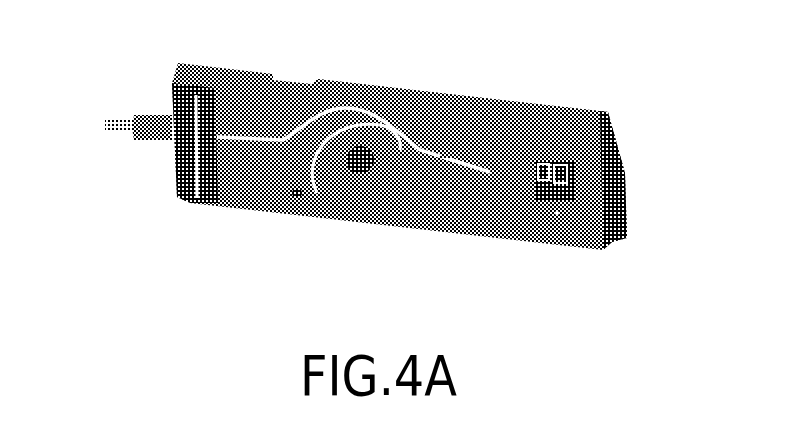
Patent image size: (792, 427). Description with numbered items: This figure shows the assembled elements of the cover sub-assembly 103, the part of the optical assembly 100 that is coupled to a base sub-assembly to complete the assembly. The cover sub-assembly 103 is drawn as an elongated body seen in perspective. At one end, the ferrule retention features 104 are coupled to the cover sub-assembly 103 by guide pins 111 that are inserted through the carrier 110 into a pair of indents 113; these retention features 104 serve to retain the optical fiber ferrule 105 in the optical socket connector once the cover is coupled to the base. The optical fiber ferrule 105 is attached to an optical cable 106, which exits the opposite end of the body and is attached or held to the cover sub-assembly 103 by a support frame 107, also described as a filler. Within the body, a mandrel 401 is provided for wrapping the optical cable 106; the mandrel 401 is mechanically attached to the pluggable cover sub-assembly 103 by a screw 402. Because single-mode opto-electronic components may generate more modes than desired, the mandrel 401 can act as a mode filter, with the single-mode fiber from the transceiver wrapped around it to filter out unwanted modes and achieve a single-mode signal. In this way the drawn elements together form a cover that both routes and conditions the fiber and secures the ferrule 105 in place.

The optical assembly 100 is at (399, 245).
The cover sub-assembly 103 is at (412, 110).
The ferrule retention features 104 is at (617, 193).
The optical fiber ferrule 105 is at (547, 190).
The optical cable 106 is at (260, 143).
The support frame 107 is at (173, 153).
The carrier 110 is at (582, 167).
The guide pins 111 is at (547, 137).
The indents 113 is at (470, 133).
The mandrel 401 is at (393, 207).
The screw 402 is at (348, 167).